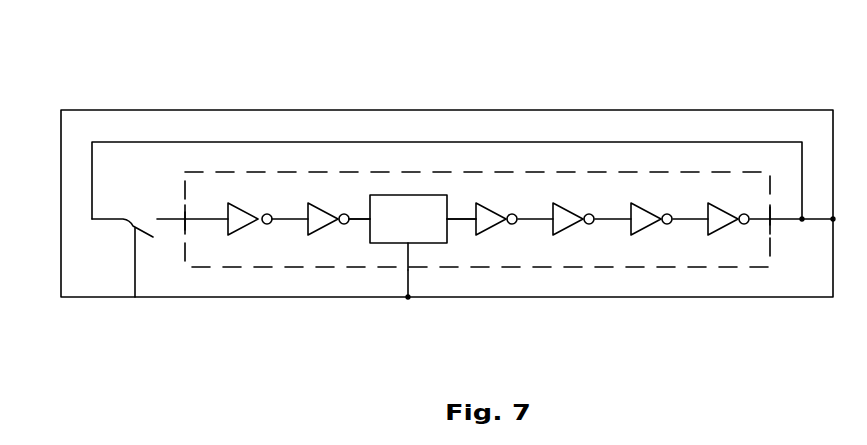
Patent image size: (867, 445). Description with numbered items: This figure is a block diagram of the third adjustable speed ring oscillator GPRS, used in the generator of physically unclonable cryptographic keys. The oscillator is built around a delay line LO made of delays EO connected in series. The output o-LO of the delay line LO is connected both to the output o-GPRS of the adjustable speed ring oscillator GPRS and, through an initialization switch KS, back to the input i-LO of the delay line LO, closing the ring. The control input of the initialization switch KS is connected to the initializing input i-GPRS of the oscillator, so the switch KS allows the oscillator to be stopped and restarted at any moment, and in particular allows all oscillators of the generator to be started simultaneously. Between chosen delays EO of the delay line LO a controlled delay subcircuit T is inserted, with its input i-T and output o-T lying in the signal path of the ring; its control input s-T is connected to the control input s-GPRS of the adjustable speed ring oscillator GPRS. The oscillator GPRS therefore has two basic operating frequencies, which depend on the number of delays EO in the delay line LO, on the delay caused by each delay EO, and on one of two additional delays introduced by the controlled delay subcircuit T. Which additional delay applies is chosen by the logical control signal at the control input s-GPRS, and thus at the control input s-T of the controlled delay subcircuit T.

The initialization switch KS is at (138, 225).
The adjustable speed ring oscillator GPRS is at (215, 110).
The initializing input of the oscillator i-GPRS is at (136, 297).
The output of the adjustable speed ring oscillator o-GPRS is at (833, 219).
The control input of the adjustable speed ring oscillator s-GPRS is at (408, 298).
The delay line LO is at (457, 172).
The input of the delay line i-LO is at (187, 221).
The output of the delay line o-LO is at (762, 216).
The delays EO is at (566, 204).
The controlled delay subcircuit T is at (392, 243).
The input of the controlled delay subcircuit i-T is at (370, 224).
The output of the controlled delay subcircuit o-T is at (448, 224).
The control input of the controlled delay subcircuit s-T is at (407, 248).